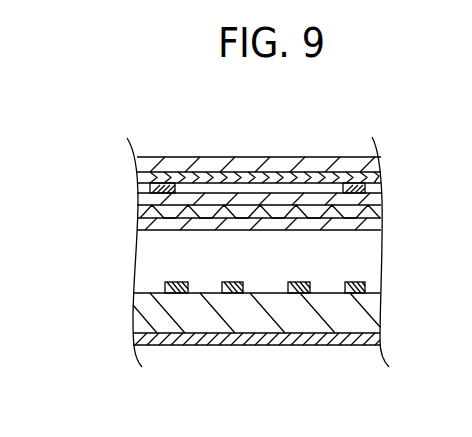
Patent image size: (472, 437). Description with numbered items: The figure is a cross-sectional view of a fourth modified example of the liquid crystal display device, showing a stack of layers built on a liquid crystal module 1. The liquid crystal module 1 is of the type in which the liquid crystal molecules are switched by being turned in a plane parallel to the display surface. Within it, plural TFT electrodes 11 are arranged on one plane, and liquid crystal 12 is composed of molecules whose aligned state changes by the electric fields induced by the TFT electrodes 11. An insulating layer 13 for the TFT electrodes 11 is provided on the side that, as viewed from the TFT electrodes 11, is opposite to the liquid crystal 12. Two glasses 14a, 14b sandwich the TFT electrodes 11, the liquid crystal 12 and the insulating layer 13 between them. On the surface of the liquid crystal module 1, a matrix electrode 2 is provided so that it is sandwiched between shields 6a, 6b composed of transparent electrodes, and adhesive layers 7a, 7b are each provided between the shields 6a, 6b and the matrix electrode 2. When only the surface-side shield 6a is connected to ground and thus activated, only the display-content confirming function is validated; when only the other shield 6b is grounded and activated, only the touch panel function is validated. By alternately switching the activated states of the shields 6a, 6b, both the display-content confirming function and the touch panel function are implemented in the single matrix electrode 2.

The liquid crystal module 1 is at (393, 256).
The matrix electrode 2 is at (163, 182).
The surface-side shield 6a is at (140, 165).
The shield 6b is at (145, 213).
The adhesive layer 7a is at (145, 178).
The adhesive layer 7b is at (147, 198).
The TFT electrodes 11 is at (355, 293).
The liquid crystal 12 is at (148, 270).
The insulating layer 13 is at (140, 318).
The glass 14a is at (150, 223).
The glass 14b is at (175, 345).